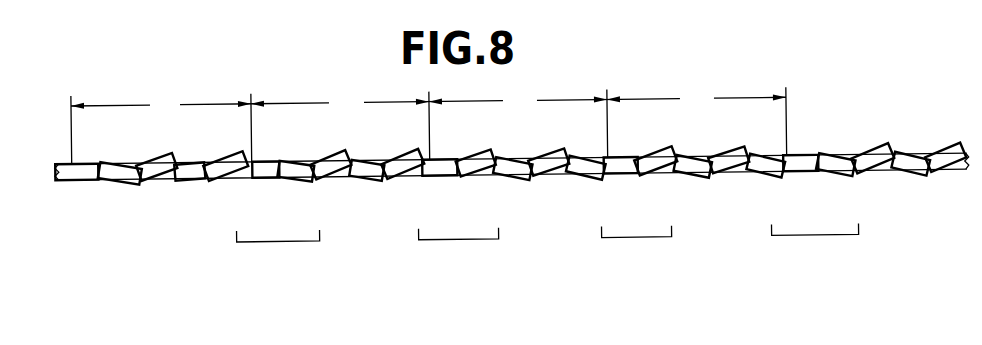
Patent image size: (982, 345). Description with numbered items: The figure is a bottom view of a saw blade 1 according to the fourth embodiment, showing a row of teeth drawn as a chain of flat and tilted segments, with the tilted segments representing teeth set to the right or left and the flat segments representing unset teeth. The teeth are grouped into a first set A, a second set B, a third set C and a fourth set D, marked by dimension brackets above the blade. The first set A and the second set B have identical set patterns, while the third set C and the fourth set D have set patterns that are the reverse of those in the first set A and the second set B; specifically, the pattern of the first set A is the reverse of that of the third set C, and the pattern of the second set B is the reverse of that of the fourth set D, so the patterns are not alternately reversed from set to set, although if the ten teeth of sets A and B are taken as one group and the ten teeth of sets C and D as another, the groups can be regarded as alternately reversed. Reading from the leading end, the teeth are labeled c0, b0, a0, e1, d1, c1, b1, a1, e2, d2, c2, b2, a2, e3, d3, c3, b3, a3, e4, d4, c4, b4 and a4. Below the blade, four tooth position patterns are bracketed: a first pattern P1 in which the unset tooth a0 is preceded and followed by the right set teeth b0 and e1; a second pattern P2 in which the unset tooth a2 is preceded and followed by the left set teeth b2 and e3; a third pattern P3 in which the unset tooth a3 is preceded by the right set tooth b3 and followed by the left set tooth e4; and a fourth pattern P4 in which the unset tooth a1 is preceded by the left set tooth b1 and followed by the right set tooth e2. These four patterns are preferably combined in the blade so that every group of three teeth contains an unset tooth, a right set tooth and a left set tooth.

The saw blade 1 is at (816, 158).
The unset tooth a4 is at (93, 182).
The set tooth b4 is at (128, 182).
The set tooth c4 is at (168, 182).
The set tooth d4 is at (198, 182).
The left set tooth e4 is at (240, 182).
The unset tooth a3 is at (278, 182).
The right set tooth b3 is at (315, 182).
The set tooth c3 is at (352, 182).
The set tooth d3 is at (378, 182).
The left set tooth e3 is at (415, 182).
The unset tooth a2 is at (453, 182).
The left set tooth b2 is at (493, 182).
The set tooth c2 is at (522, 182).
The set tooth d2 is at (562, 182).
The right set tooth e2 is at (598, 182).
The unset tooth a1 is at (632, 182).
The left set tooth b1 is at (670, 182).
The set tooth c1 is at (703, 182).
The set tooth d1 is at (737, 182).
The right set tooth e1 is at (773, 182).
The unset tooth a0 is at (807, 182).
The right set tooth b0 is at (853, 182).
The set tooth c0 is at (887, 182).
The first pattern P1 is at (814, 244).
The second pattern P2 is at (459, 249).
The third pattern P3 is at (278, 251).
The fourth pattern P4 is at (637, 247).
The first set A is at (697, 99).
The second set B is at (520, 101).
The third set C is at (348, 103).
The fourth set D is at (168, 106).